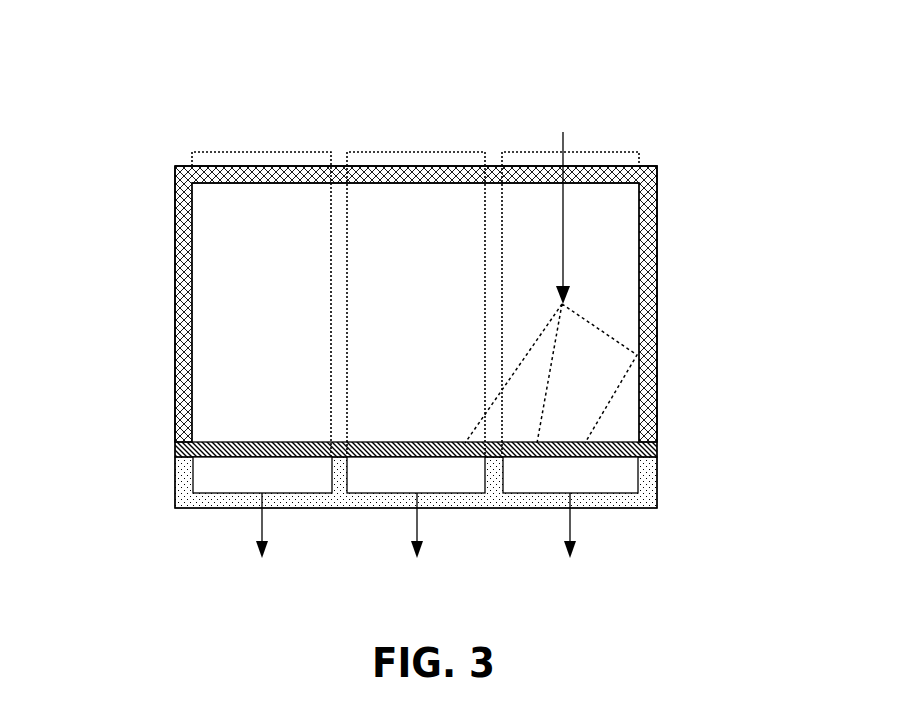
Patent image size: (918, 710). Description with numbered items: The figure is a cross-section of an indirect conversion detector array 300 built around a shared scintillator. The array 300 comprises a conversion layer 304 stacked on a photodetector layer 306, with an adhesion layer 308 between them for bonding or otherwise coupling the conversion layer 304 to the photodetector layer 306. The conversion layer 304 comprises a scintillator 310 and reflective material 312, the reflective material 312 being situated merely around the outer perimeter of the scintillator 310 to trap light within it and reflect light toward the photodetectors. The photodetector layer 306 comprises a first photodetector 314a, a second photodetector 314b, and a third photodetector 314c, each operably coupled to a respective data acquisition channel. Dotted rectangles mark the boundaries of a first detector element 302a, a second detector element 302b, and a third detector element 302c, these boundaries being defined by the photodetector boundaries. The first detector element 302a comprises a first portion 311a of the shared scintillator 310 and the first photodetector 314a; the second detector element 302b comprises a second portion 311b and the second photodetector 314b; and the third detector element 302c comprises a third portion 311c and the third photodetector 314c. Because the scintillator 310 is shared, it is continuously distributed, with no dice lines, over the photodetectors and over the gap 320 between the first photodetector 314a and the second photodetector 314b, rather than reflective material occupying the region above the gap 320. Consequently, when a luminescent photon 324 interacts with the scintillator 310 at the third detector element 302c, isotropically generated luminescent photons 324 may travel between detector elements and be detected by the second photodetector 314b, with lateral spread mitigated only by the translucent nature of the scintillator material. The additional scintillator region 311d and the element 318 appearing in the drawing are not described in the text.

The indirect conversion detector array 300 is at (128, 79).
The first detector element 302a is at (262, 136).
The second detector element 302b is at (417, 136).
The third detector element 302c is at (573, 136).
The conversion layer 304 is at (725, 165).
The photodetector layer 306 is at (725, 459).
The adhesion layer 308 is at (657, 451).
The scintillator 310 is at (186, 311).
The first portion of shared scintillator 311a is at (288, 281).
The second portion of shared scintillator 311b is at (437, 281).
The third portion of shared scintillator 311c is at (622, 248).
The gap between chambers 311d is at (337, 363).
The reflective material 312 is at (182, 244).
The first photodetector 314a is at (262, 536).
The second photodetector 314b is at (416, 536).
The third photodetector 314c is at (570, 536).
The substrate 318 is at (183, 493).
The gap 320 is at (327, 452).
The luminescent photon 324 is at (561, 144).